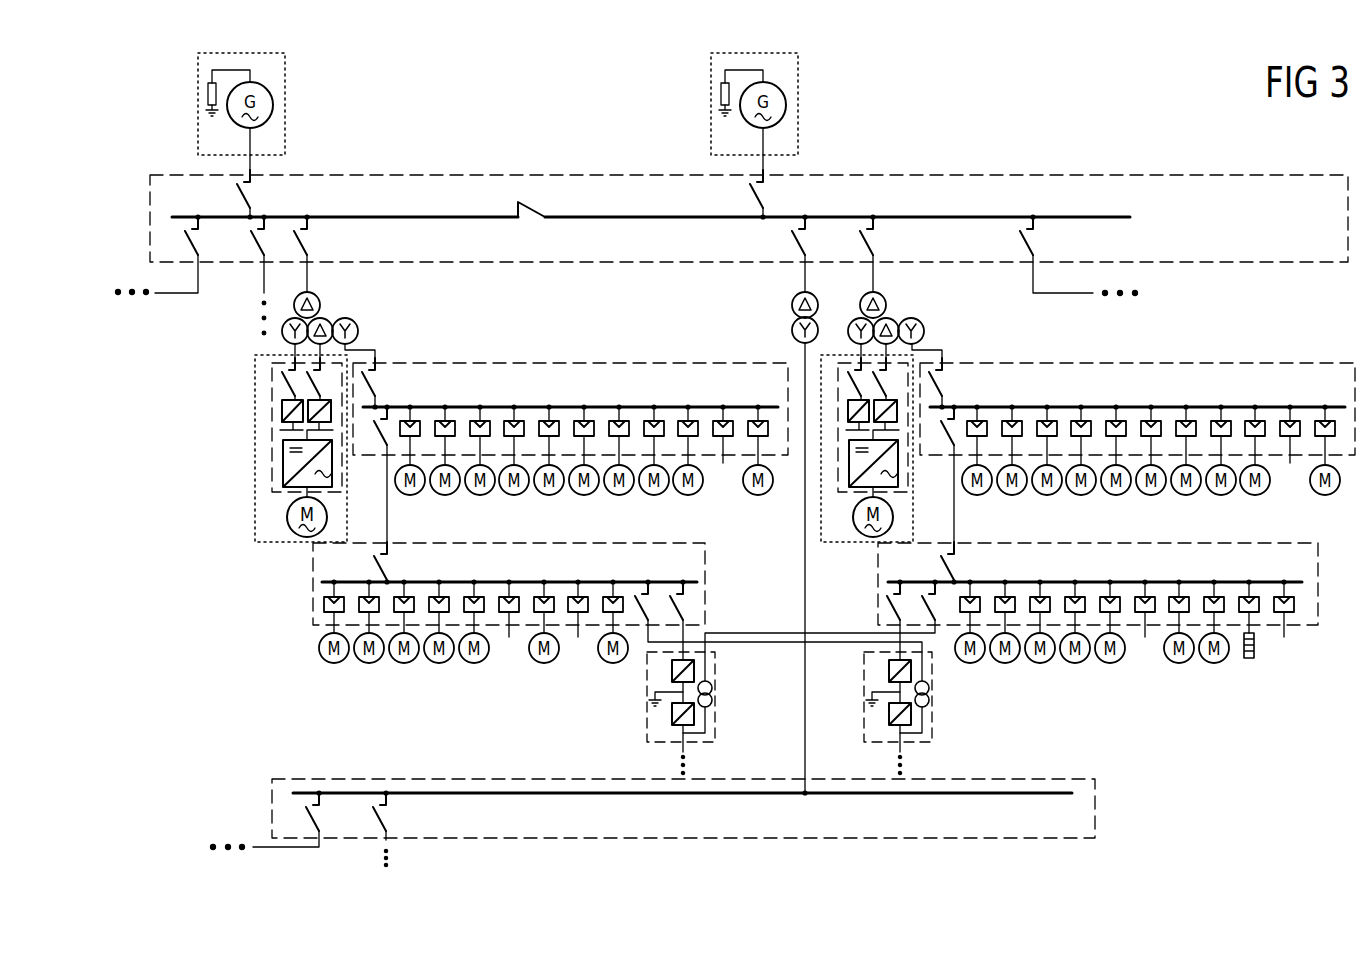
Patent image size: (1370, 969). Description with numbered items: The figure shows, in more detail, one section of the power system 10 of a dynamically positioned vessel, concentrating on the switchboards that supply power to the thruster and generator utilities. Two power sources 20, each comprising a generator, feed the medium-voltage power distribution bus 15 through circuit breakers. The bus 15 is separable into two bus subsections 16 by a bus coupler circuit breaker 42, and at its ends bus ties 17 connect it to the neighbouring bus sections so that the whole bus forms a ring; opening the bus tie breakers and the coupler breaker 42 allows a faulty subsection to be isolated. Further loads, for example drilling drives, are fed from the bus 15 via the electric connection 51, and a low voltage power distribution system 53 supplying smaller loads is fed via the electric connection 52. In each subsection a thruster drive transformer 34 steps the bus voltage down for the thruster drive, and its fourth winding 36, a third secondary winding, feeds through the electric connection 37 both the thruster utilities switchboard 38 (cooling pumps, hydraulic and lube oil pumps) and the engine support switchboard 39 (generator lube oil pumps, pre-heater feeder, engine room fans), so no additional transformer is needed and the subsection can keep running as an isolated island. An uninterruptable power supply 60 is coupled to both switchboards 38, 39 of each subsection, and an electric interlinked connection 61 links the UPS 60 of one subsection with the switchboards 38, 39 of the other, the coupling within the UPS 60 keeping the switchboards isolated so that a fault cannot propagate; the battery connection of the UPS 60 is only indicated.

The power system 10 is at (155, 158).
The power distribution bus 15 is at (140, 183).
The bus subsections 16 is at (447, 215).
The bus ties 17 is at (172, 295).
The power sources 20 is at (284, 65).
The thruster drive transformer 34 is at (318, 298).
The fourth winding 36 is at (357, 322).
The electric connection 37 is at (379, 354).
The thruster utilities switchboard 38 is at (571, 362).
The engine support switchboard 39 is at (536, 543).
The bus coupler circuit breakers 42 is at (522, 200).
The electric connection 51 is at (263, 284).
The electric connection 52 is at (805, 521).
The low-voltage busbar 53 is at (535, 795).
The uninterruptable power supply 60 is at (647, 719).
The electric interlinked connection 61 is at (757, 632).